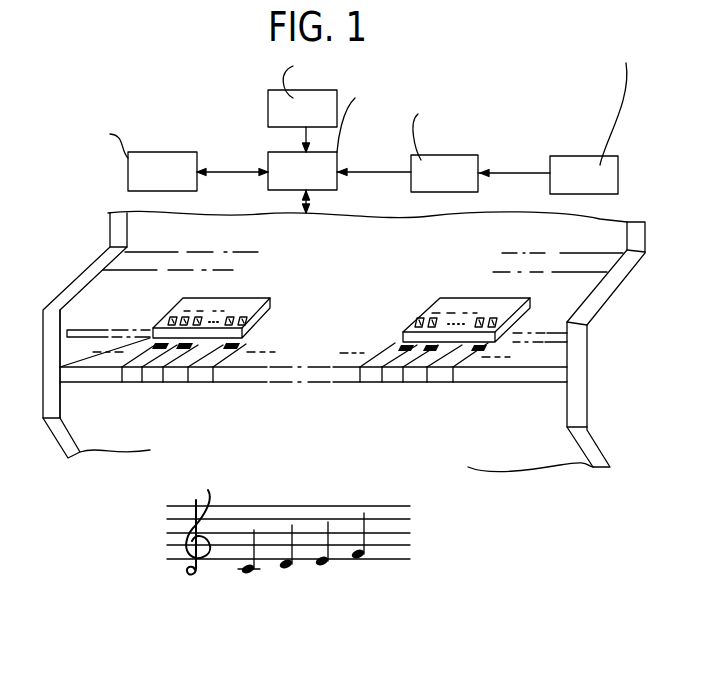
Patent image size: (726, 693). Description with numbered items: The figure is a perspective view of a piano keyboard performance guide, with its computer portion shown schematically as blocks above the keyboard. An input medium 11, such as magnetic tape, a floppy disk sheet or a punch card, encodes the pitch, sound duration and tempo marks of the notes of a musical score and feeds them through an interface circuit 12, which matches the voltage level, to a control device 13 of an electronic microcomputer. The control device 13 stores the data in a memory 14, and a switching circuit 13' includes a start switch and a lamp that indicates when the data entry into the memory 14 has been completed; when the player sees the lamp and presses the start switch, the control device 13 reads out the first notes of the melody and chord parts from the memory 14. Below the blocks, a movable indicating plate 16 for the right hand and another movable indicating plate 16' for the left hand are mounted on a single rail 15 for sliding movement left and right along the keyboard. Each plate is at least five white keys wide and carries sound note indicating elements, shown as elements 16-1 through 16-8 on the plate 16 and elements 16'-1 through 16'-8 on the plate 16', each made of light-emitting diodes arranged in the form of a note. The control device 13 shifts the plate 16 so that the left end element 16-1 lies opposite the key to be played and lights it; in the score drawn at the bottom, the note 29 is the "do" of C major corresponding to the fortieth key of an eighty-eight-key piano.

The input medium 11 is at (611, 162).
The interface circuit 12 is at (473, 160).
The control device 13 is at (391, 136).
The switching circuit 13' is at (343, 92).
The memory 14 is at (163, 160).
The rail 15 is at (378, 364).
The movable indicating plate 16 is at (478, 299).
The sound note indicating element 16-1 is at (423, 315).
The sound note indicating element 16-8 is at (498, 317).
The movable indicating plate 16' is at (256, 307).
The sound note indicating element 16'-1 is at (299, 297).
The sound note indicating element 16'-8 is at (225, 294).
The note 29 is at (250, 573).